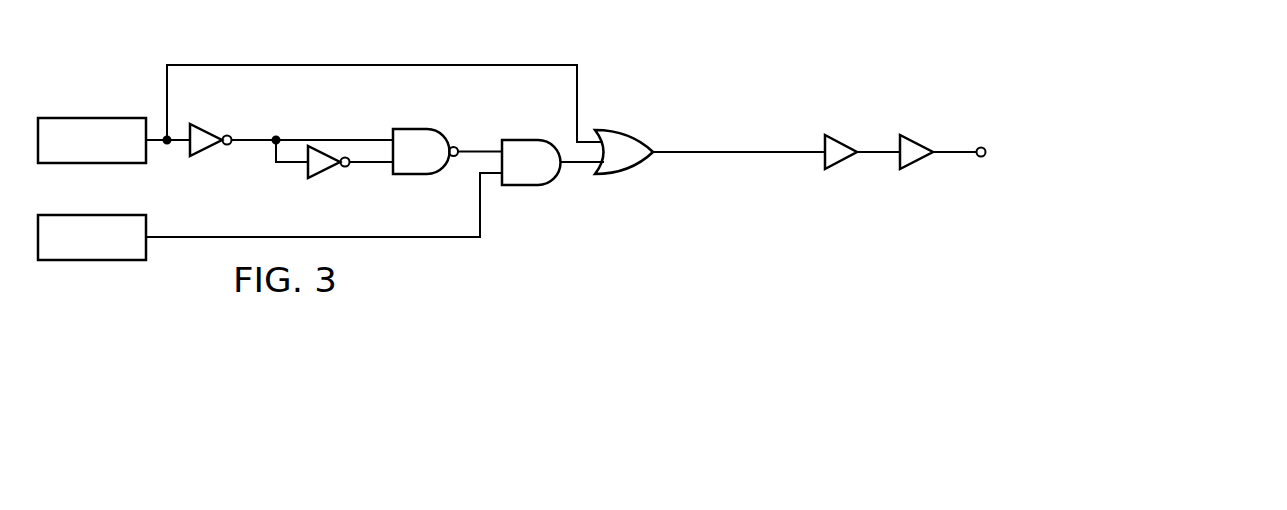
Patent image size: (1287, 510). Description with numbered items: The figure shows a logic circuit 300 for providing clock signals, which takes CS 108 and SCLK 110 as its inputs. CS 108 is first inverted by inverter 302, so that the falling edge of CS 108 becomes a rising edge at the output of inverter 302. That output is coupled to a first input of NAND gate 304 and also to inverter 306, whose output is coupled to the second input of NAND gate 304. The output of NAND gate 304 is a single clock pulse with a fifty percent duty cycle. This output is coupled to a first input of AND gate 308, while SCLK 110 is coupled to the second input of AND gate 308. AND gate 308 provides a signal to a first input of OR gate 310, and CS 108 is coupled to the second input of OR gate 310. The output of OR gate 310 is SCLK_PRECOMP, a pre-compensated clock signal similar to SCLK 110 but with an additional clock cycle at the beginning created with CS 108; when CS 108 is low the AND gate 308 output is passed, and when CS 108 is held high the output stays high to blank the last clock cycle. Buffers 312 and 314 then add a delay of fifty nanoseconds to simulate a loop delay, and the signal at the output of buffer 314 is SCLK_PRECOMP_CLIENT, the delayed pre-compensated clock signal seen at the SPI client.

The logic circuit 300 is at (1030, 63).
The CS 108 is at (92, 118).
The SCLK 110 is at (92, 260).
The inverter 302 is at (215, 126).
The NAND gate 304 is at (415, 129).
The inverter 306 is at (332, 177).
The AND gate 308 is at (523, 140).
The OR gate 310 is at (620, 129).
The buffer 312 is at (860, 120).
The buffer 314 is at (938, 120).